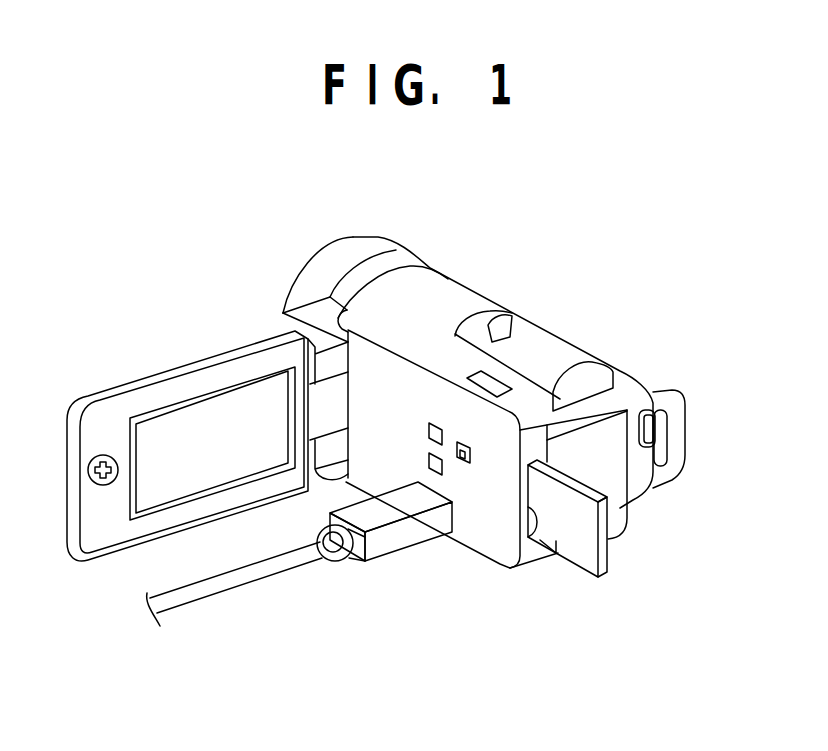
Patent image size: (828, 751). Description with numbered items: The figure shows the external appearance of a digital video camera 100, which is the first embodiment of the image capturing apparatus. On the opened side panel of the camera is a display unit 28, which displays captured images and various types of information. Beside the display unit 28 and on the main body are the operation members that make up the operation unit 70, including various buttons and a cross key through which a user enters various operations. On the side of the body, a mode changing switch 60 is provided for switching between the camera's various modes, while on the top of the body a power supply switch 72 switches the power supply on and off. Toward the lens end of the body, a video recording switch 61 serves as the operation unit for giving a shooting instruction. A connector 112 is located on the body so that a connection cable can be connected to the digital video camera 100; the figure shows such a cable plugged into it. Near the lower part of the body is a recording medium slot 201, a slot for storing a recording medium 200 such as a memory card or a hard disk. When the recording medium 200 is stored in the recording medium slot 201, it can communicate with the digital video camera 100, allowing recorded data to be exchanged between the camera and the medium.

The digital video camera 100 is at (480, 271).
The display unit 28 is at (229, 410).
The operation unit 70 is at (113, 486).
The mode changing switch 60 is at (460, 462).
The power supply switch 72 is at (501, 385).
The video recording switch 61 is at (657, 424).
The connector 112 is at (417, 487).
The recording medium 200 is at (585, 558).
The recording medium slot 201 is at (540, 540).